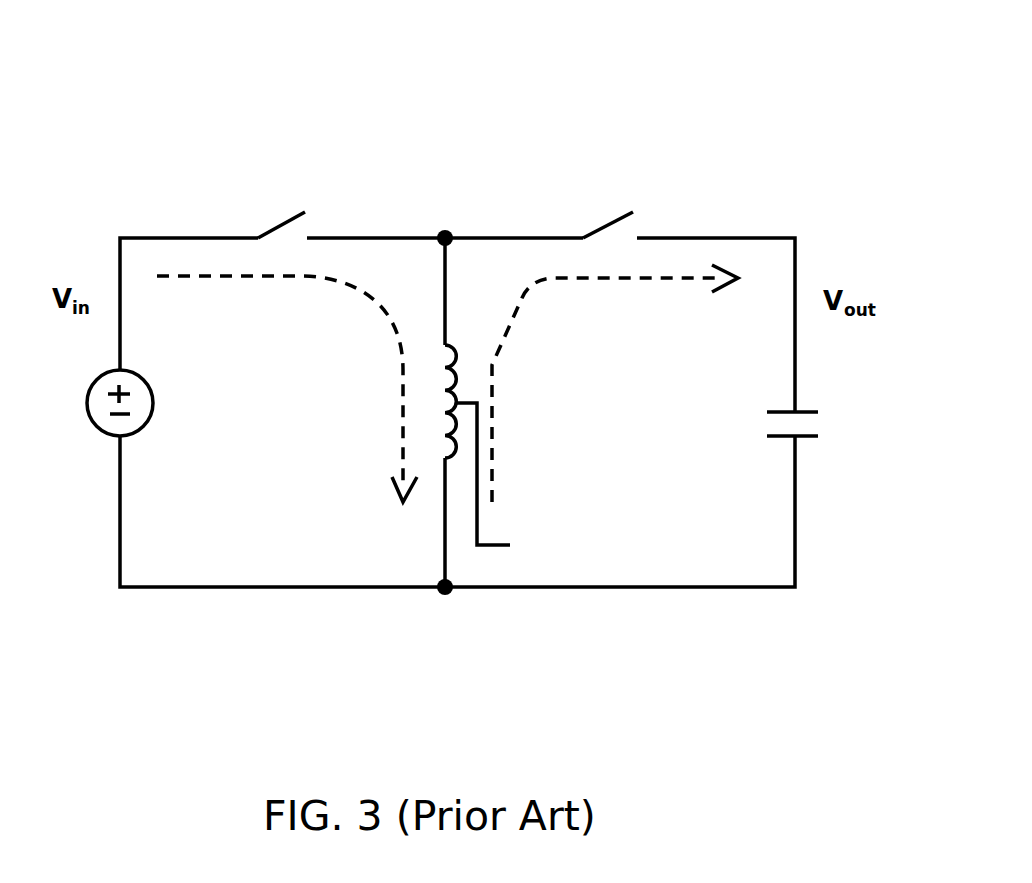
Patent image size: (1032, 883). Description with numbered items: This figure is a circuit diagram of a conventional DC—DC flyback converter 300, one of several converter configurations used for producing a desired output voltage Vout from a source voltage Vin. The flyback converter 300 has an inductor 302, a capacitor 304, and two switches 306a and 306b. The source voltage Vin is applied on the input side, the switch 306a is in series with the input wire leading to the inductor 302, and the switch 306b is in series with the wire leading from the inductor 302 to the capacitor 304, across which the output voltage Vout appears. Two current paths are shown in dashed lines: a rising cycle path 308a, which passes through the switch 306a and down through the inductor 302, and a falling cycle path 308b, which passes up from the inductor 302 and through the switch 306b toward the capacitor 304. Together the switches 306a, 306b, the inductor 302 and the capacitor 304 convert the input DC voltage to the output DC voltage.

The DC—DC flyback converter 300 is at (858, 33).
The inductor 302 is at (509, 449).
The capacitor 304 is at (807, 410).
The switch 306a is at (280, 224).
The switch 306b is at (605, 226).
The rising cycle path 308a is at (297, 278).
The falling cycle path 308b is at (533, 287).